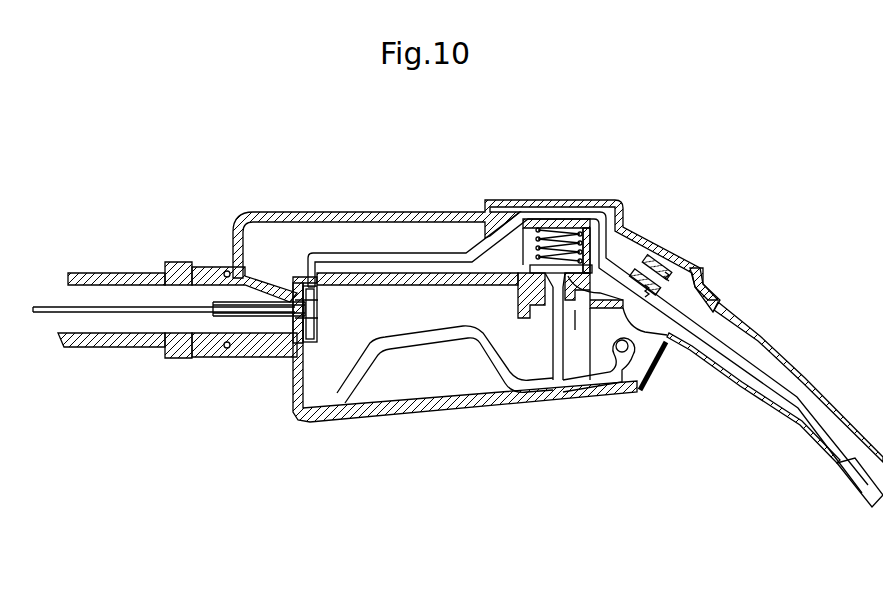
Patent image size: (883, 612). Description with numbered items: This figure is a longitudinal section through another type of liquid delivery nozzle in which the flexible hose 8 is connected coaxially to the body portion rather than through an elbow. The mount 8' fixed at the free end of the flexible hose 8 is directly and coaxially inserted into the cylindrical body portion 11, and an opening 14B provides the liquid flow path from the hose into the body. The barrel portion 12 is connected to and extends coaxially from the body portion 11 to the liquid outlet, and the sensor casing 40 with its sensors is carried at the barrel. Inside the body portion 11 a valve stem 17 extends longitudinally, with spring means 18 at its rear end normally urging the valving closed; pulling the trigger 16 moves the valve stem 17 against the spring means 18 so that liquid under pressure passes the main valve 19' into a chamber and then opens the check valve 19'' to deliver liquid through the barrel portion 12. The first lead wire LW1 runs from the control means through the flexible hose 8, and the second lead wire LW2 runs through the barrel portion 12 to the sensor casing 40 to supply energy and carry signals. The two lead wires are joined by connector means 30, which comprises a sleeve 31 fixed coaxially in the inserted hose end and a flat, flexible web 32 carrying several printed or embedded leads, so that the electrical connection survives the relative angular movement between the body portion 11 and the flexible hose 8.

The flexible hose 8 is at (111, 275).
The mount 8' is at (231, 277).
The cylindrical body portion 11 is at (378, 211).
The second lead wire LW2 is at (427, 252).
The first lead wire LW1 is at (98, 311).
The spring means 18 is at (575, 245).
The main valve 19' is at (668, 254).
The check valve 19'' is at (725, 273).
The barrel portion 12 is at (808, 376).
The sensor casing 40 is at (862, 484).
The sleeve 31 is at (222, 314).
The flat and flexible web 32 is at (297, 310).
The opening 14B is at (258, 337).
The connector means 30 is at (330, 325).
The trigger 16 is at (413, 345).
The valve stem 17 is at (560, 355).